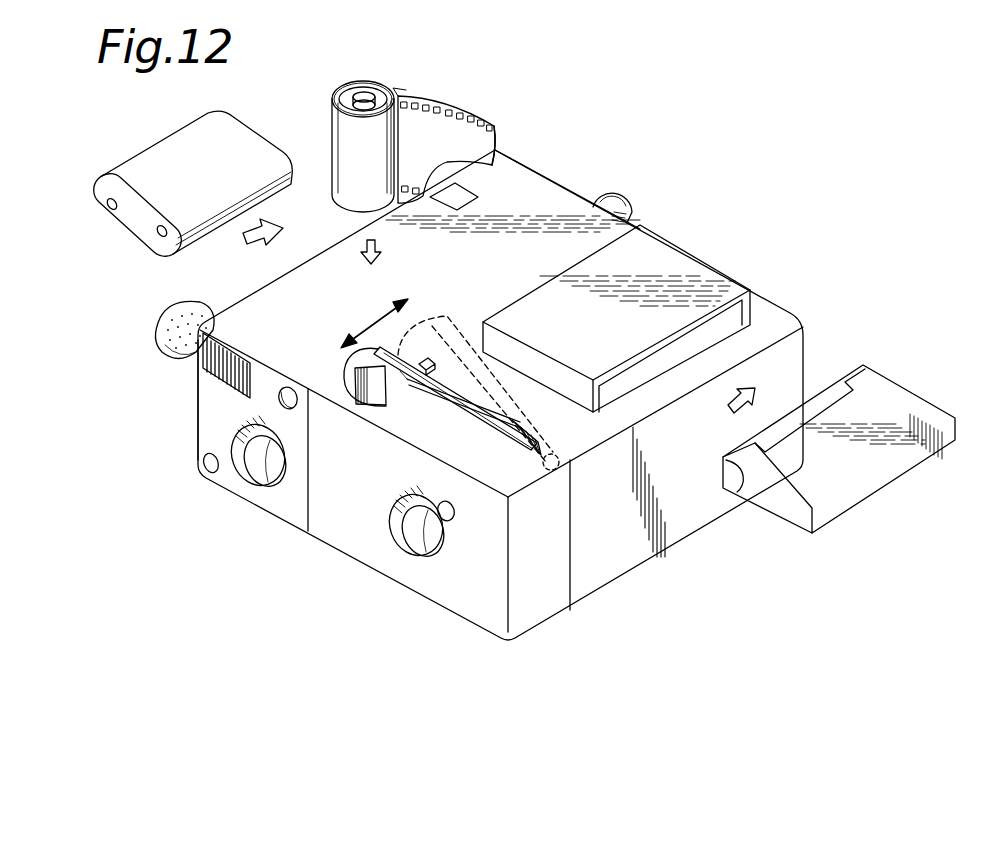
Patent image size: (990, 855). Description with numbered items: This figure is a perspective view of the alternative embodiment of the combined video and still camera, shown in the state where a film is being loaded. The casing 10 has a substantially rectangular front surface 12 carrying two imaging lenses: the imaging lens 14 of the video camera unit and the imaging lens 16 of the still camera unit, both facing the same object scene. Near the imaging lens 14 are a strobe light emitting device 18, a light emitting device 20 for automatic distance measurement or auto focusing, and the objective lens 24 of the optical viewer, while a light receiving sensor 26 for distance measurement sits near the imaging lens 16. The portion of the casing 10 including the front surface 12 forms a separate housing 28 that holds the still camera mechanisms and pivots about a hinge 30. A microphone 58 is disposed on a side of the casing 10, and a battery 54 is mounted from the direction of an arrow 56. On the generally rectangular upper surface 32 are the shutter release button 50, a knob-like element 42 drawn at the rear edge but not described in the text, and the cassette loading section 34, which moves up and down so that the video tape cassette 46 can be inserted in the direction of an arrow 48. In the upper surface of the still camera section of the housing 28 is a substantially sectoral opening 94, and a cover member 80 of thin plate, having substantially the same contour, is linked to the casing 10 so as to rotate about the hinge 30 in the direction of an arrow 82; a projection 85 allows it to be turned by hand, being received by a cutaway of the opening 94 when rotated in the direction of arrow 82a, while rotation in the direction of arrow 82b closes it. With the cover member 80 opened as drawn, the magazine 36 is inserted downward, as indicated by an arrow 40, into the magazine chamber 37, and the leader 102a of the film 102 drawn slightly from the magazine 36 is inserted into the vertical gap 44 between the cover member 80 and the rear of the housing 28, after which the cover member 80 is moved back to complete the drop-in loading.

The casing 10 is at (320, 250).
The front surface 12 is at (203, 424).
The imaging lens 14 is at (254, 480).
The imaging lens 16 is at (410, 547).
The strobe light emitting device 18 is at (206, 376).
The light emitting device 20 is at (206, 471).
The objective lens 24 is at (288, 387).
The light receiving sensor 26 is at (450, 519).
The housing 28 is at (330, 531).
The hinge 30 is at (553, 454).
The upper surface 32 is at (535, 172).
The cassette loading section 34 is at (723, 274).
The magazine 36 is at (332, 120).
The magazine chamber 37 is at (360, 400).
The arrow 40 is at (361, 248).
The knob 42 is at (627, 192).
The vertical gap 44 is at (473, 408).
The 8 mm video tape cassette 46 is at (768, 512).
The arrow 48 is at (730, 408).
The shutter release button 50 is at (448, 182).
The battery 54 is at (273, 141).
The arrow 56 is at (245, 238).
The microphone 58 is at (170, 312).
The cover member 80 is at (421, 324).
The arrow 82 is at (366, 327).
The arrow 82a is at (393, 308).
The arrow 82b is at (353, 337).
The projection 85 is at (430, 360).
The opening 94 is at (398, 371).
The film 102 is at (433, 97).
The leader 102a is at (496, 123).